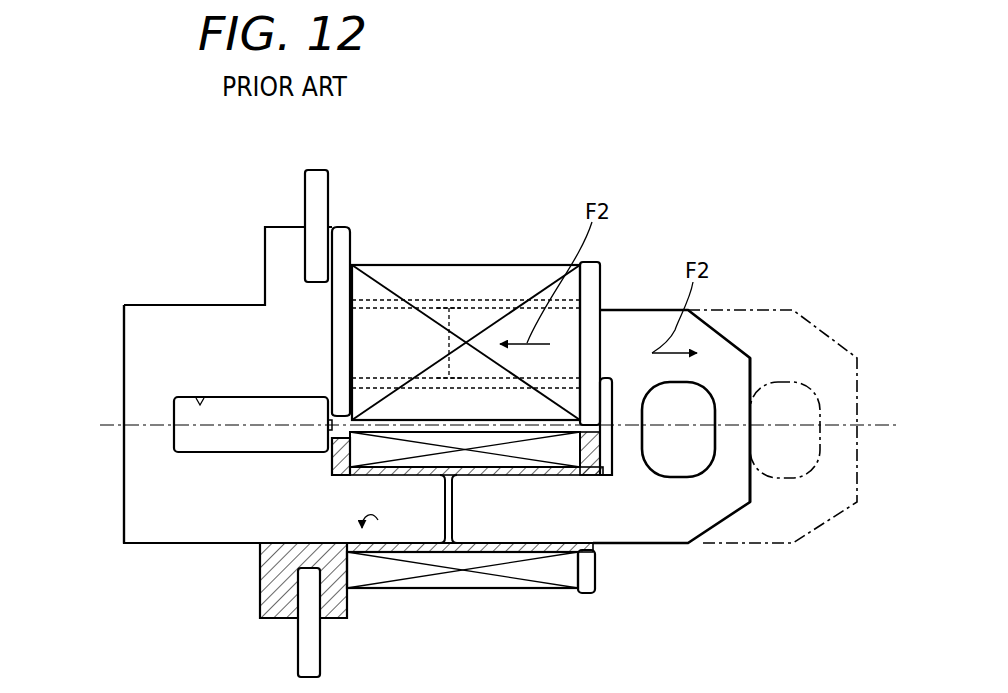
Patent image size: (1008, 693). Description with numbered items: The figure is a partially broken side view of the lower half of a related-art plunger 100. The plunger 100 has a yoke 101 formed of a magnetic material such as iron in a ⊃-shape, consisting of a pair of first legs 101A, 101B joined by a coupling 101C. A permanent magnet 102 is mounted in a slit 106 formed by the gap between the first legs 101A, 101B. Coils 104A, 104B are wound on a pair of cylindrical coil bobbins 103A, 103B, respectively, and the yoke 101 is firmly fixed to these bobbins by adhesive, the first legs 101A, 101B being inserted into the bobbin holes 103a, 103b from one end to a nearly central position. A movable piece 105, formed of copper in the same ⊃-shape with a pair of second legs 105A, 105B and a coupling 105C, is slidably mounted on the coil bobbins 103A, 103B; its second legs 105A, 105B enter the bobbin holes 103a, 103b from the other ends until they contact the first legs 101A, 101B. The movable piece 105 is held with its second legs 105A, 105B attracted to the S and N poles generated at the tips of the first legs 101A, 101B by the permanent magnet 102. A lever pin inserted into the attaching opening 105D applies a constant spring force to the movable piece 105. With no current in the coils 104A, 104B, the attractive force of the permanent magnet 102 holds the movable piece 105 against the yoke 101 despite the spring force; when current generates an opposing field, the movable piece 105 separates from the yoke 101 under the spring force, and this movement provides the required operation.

The plunger 100 is at (463, 185).
The yoke 101 is at (167, 530).
The first leg 101A is at (398, 320).
The first leg 101B is at (410, 547).
The coupling 101C is at (148, 457).
The permanent magnet 102 is at (218, 442).
The bobbin hole 103a is at (374, 322).
The bobbin hole 103b is at (370, 583).
The coil bobbin 103A is at (490, 300).
The coil bobbin 103B is at (527, 590).
The coil 104A is at (475, 268).
The coil 104B is at (475, 580).
The movable piece 105 is at (778, 320).
The second leg 105A is at (600, 278).
The second leg 105B is at (595, 572).
The coupling 105C is at (735, 475).
The attaching opening 105D is at (692, 468).
The slit 106 is at (200, 405).